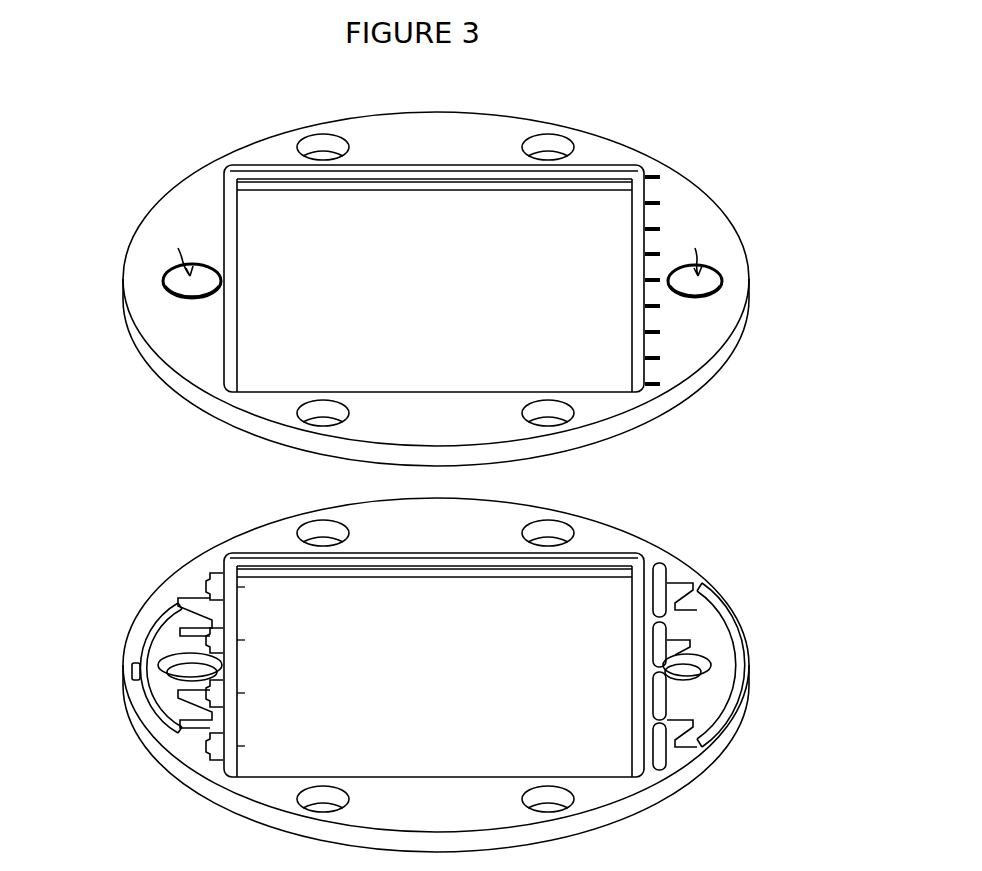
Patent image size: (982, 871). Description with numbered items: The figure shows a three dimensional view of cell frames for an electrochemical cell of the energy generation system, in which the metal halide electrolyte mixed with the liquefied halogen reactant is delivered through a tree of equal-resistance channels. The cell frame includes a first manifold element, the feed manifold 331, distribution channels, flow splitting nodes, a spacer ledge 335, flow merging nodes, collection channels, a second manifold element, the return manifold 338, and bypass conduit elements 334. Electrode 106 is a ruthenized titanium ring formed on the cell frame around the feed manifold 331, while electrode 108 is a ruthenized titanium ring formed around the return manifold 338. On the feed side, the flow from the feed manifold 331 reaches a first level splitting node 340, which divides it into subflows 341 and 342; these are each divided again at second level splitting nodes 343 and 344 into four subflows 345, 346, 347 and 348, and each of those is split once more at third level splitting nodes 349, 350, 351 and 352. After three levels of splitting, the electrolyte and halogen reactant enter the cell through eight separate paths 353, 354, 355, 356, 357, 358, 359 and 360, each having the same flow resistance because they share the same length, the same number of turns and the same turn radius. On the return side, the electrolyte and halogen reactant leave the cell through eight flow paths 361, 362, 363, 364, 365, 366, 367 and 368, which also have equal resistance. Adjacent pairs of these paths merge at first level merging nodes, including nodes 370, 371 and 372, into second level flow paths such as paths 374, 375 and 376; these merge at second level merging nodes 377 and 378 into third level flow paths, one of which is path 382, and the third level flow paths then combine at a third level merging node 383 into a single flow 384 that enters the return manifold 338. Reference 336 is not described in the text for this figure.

The electrode 106 is at (162, 290).
The electrode 108 is at (722, 290).
The feed manifold 331 is at (97, 688).
The bypass conduit element 334 is at (338, 412).
The spacer ledge 335 is at (446, 566).
The terminal clip 336 is at (663, 567).
The return manifold 338 is at (594, 676).
The first level splitting node 340 is at (158, 665).
The subflow 341 is at (150, 648).
The subflow 342 is at (147, 717).
The second level splitting node 343 is at (168, 612).
The second level splitting node 344 is at (193, 746).
The second level subflow 345 is at (172, 590).
The second level subflow 346 is at (172, 640).
The second level subflow 347 is at (150, 713).
The second level subflow 348 is at (210, 764).
The third level splitting node 349 is at (240, 592).
The third level splitting node 350 is at (240, 643).
The third level splitting node 351 is at (240, 695).
The third level splitting node 352 is at (240, 747).
The flow path 353 is at (238, 577).
The flow path 354 is at (240, 608).
The flow path 355 is at (240, 627).
The flow path 356 is at (240, 660).
The flow path 357 is at (240, 678).
The flow path 358 is at (240, 713).
The flow path 359 is at (240, 730).
The flow path 360 is at (240, 765).
The flow path 361 is at (632, 574).
The flow path 362 is at (650, 605).
The flow path 363 is at (653, 630).
The flow path 364 is at (672, 667).
The flow path 365 is at (655, 703).
The flow path 366 is at (655, 720).
The flow path 367 is at (660, 745).
The flow path 368 is at (680, 585).
The first level merging node 370 is at (717, 647).
The first level merging node 371 is at (707, 630).
The first level merging node 372 is at (688, 592).
The second level flow path 374 is at (715, 718).
The second level flow path 375 is at (727, 693).
The second level flow path 376 is at (687, 750).
The second level merging node 377 is at (697, 603).
The second level merging node 378 is at (693, 747).
The third level flow path 382 is at (707, 727).
The third level merging node 383 is at (737, 663).
The single flow 384 is at (747, 673).